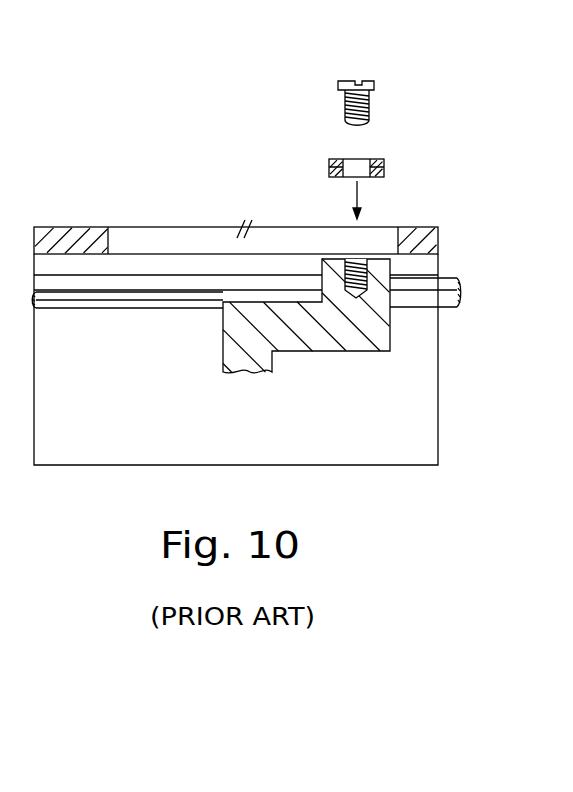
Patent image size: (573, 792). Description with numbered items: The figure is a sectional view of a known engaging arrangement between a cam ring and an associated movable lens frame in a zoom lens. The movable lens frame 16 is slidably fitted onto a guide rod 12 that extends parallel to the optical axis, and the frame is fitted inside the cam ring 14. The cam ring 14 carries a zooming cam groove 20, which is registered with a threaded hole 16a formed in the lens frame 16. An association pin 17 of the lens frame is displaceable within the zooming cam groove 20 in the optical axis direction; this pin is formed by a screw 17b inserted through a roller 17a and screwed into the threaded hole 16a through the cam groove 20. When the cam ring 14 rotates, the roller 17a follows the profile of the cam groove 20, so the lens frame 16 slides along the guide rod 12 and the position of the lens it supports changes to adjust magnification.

The guide rod 12 is at (132, 301).
The cam ring 14 is at (438, 240).
The movable lens frame 16 is at (374, 295).
The threaded hole 16a is at (362, 263).
The association pin 17 is at (368, 75).
The roller 17a is at (384, 160).
The screw 17b is at (332, 82).
The zooming cam groove 20 is at (162, 238).